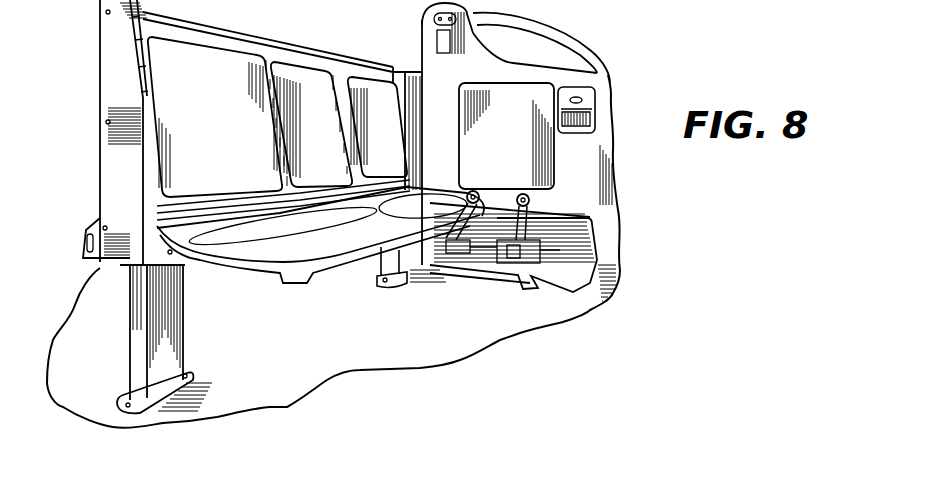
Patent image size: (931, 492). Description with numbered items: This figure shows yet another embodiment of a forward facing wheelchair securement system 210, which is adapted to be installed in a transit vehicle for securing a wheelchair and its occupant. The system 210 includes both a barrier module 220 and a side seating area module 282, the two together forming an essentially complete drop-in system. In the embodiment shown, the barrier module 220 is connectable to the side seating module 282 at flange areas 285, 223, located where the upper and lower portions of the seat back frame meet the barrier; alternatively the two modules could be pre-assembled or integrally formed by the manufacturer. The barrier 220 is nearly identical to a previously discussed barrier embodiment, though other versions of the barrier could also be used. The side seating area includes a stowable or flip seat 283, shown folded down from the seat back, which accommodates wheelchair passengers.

The forward facing wheelchair securement system 210 is at (400, 316).
The barrier module 220 is at (492, 72).
The flange area 223 is at (417, 77).
The side seating area module 282 is at (213, 80).
The stowable or flip seat 283 is at (300, 247).
The flange area 285 is at (403, 82).